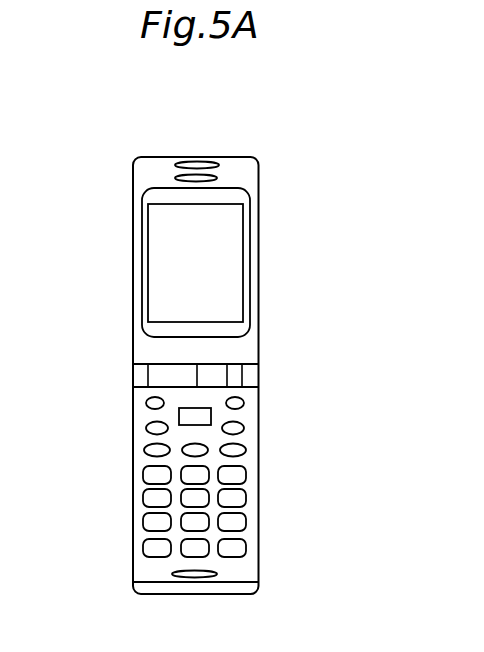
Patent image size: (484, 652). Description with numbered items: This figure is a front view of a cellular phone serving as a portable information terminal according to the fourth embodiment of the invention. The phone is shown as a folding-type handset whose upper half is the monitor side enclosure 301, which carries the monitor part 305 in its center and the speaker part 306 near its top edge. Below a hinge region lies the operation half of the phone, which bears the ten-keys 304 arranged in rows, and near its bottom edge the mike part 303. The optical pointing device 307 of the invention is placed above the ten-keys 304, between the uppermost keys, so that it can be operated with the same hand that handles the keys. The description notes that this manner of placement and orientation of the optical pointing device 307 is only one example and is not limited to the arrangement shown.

The monitor side enclosure 301 is at (228, 178).
The mike part 303 is at (194, 583).
The ten-keys 304 is at (143, 475).
The monitor part 305 is at (165, 267).
The speaker part 306 is at (200, 157).
The optical pointing device 307 is at (179, 412).